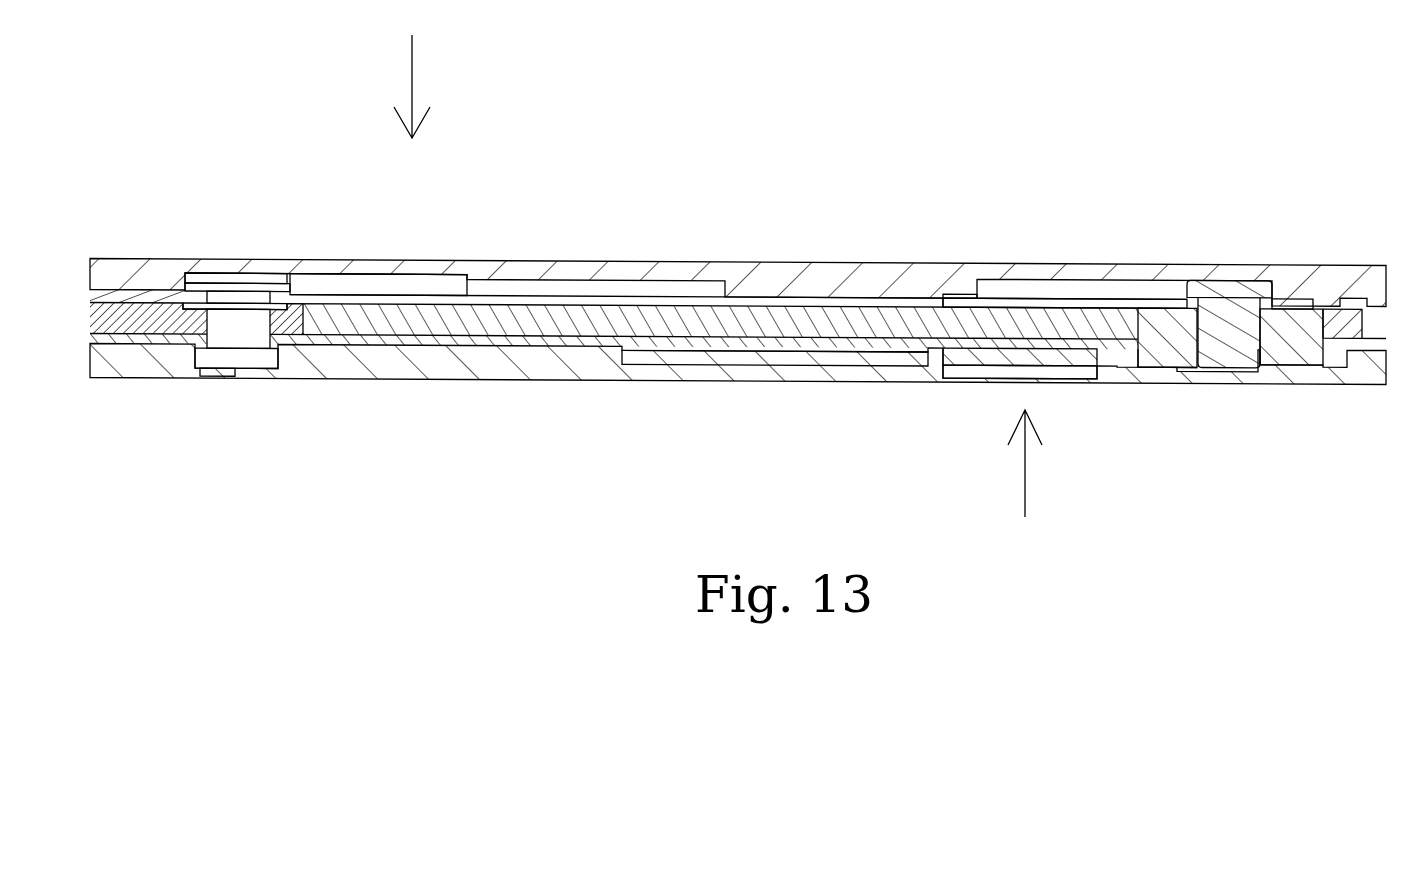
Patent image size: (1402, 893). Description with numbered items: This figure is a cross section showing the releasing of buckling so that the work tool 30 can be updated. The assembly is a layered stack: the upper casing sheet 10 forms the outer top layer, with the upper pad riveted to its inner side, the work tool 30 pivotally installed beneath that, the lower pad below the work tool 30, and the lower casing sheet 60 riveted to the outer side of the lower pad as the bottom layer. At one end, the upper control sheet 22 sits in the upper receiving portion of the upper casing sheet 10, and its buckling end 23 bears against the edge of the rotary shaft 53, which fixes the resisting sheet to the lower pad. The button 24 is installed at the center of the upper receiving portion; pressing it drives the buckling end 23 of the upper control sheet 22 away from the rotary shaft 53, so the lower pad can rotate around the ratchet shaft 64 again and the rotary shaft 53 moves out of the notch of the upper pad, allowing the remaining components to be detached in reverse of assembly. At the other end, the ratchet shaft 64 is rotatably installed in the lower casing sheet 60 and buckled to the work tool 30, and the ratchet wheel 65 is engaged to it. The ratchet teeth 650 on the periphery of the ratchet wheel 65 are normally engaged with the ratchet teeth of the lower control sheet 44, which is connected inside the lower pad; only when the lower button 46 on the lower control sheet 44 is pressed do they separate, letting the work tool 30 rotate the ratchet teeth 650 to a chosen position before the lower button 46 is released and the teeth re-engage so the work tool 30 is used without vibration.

The upper casing sheet 10 is at (823, 272).
The upper control sheet 22 is at (372, 290).
The buckling end 23 is at (268, 300).
The button 24 is at (442, 272).
The work tool 30 is at (963, 313).
The lower control sheet 44 is at (935, 347).
The lower button 46 is at (1050, 355).
The rotary shaft 53 is at (243, 278).
The lower casing sheet 60 is at (763, 373).
The ratchet shaft 64 is at (1227, 288).
The ratchet wheel 65 is at (1157, 358).
The ratchet teeth 650 is at (1140, 363).